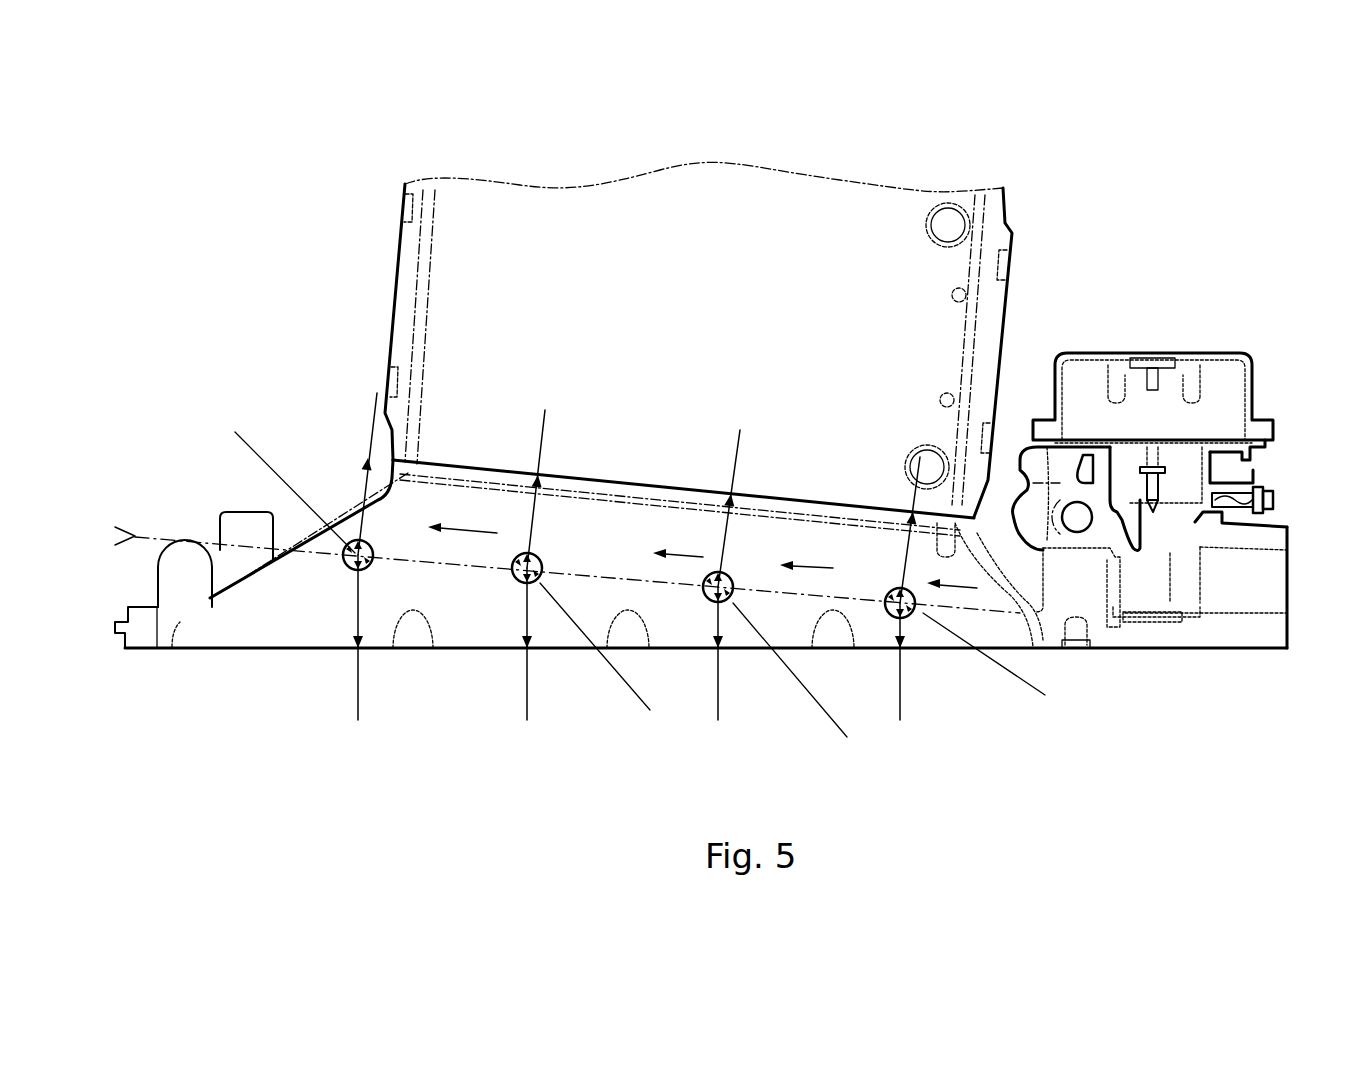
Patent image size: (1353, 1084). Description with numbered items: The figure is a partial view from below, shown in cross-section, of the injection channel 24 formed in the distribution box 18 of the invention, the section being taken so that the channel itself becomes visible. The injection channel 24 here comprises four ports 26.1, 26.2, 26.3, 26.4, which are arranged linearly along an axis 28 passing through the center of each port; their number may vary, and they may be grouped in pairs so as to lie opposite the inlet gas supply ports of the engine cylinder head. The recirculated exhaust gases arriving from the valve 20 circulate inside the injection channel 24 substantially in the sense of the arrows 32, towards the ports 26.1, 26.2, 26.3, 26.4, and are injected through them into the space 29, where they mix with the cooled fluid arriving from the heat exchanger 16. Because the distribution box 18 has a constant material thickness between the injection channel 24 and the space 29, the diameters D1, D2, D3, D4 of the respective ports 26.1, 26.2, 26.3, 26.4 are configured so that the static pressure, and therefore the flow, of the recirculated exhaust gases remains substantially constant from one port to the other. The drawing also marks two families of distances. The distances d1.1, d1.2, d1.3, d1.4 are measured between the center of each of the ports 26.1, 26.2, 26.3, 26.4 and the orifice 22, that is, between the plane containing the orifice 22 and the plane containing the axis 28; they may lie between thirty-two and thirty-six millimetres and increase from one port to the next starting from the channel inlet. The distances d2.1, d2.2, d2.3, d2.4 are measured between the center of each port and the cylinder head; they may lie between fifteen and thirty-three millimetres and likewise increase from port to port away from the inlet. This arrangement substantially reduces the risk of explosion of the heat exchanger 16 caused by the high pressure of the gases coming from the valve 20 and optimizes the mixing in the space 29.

The heat exchanger 16 is at (448, 310).
The distribution box 18 is at (237, 622).
The valve 20 is at (1217, 400).
The orifice 22 is at (367, 453).
The injection channel 24 is at (447, 578).
The port 26.1 is at (888, 614).
The port 26.2 is at (705, 598).
The port 26.3 is at (514, 580).
The port 26.4 is at (345, 567).
The axis 28 is at (108, 534).
The space 29 is at (626, 565).
The arrows 32 is at (702, 547).
The diameter D1 is at (1000, 667).
The diameter D2 is at (799, 684).
The diameter D3 is at (604, 661).
The diameter D4 is at (278, 483).
The distance d1.1 is at (894, 527).
The distance d1.2 is at (712, 504).
The distance d1.3 is at (518, 483).
The distance d1.4 is at (351, 471).
The distance d2.1 is at (902, 674).
The distance d2.2 is at (719, 672).
The distance d2.3 is at (529, 661).
The distance d2.4 is at (356, 654).